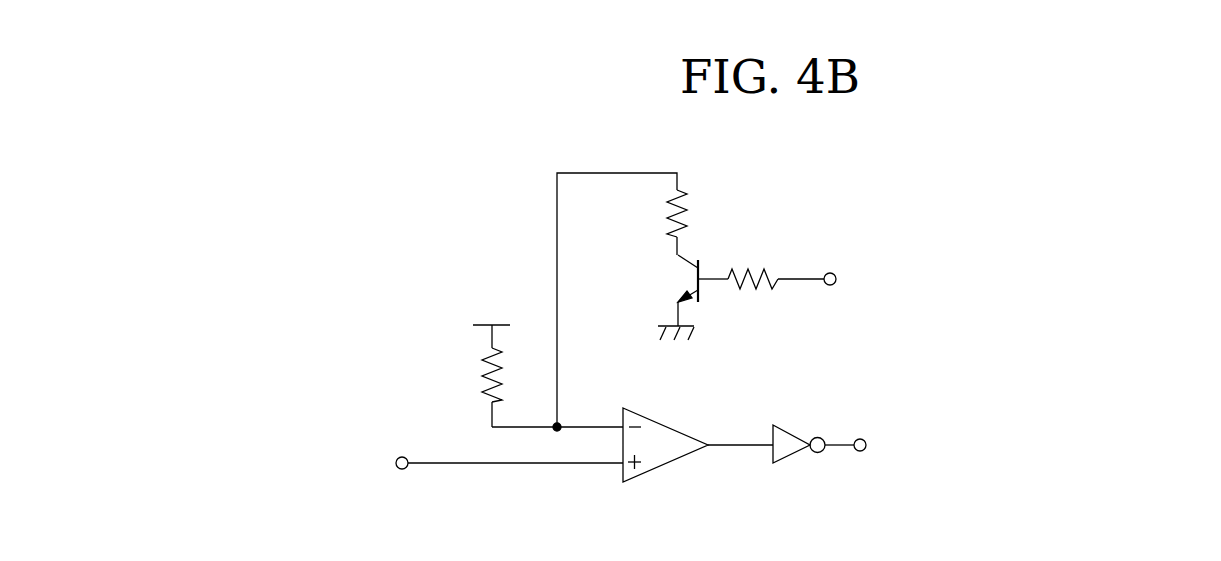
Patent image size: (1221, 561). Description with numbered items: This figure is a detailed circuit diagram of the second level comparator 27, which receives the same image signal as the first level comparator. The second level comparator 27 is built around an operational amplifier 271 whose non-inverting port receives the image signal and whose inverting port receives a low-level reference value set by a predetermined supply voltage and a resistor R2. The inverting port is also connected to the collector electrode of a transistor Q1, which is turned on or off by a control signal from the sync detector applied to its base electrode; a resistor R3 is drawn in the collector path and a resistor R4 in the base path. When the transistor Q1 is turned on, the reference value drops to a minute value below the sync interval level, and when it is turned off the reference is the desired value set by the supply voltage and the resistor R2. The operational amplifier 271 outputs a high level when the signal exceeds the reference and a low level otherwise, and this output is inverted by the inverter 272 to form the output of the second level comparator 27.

The second level comparator 27 is at (810, 192).
The operational amplifier 271 is at (688, 412).
The inverter 272 is at (792, 433).
The resistor R2 is at (471, 375).
The resistor R3 is at (700, 213).
The resistor R4 is at (782, 263).
The transistor Q1 is at (685, 278).